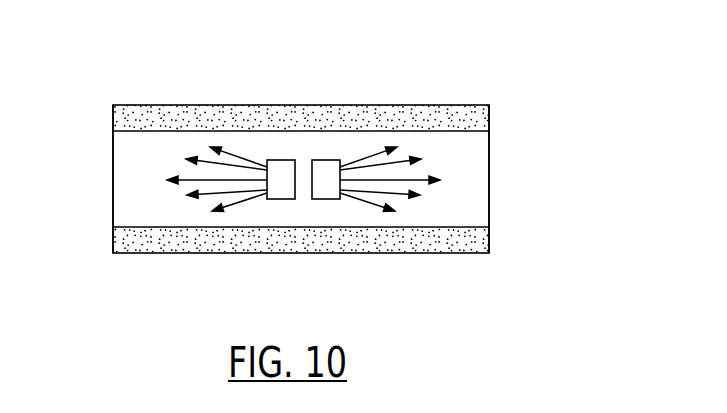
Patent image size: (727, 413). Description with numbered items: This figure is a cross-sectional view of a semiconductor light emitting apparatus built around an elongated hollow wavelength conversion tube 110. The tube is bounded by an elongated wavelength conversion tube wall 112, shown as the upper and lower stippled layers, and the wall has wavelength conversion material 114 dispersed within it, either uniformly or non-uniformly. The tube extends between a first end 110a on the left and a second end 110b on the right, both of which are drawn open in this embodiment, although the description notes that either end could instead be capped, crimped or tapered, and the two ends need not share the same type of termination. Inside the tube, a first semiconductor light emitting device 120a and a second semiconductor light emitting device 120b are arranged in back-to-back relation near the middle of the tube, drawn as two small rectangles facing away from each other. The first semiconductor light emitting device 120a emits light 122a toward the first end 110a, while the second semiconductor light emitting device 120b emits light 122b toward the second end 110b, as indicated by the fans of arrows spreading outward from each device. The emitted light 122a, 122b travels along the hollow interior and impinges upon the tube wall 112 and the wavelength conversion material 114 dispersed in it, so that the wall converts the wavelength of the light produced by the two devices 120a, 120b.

The elongated hollow wavelength conversion tube 110 is at (301, 137).
The first end 110a is at (112, 213).
The second end 110b is at (492, 208).
The elongated wavelength conversion tube wall 112 is at (363, 106).
The wavelength conversion material 114 is at (200, 118).
The first semiconductor light emitting device 120a is at (284, 199).
The second semiconductor light emitting device 120b is at (322, 199).
The light emitted by first semiconductor light emitting device 122a is at (235, 178).
The light emitted by second semiconductor light emitting device 122b is at (368, 178).